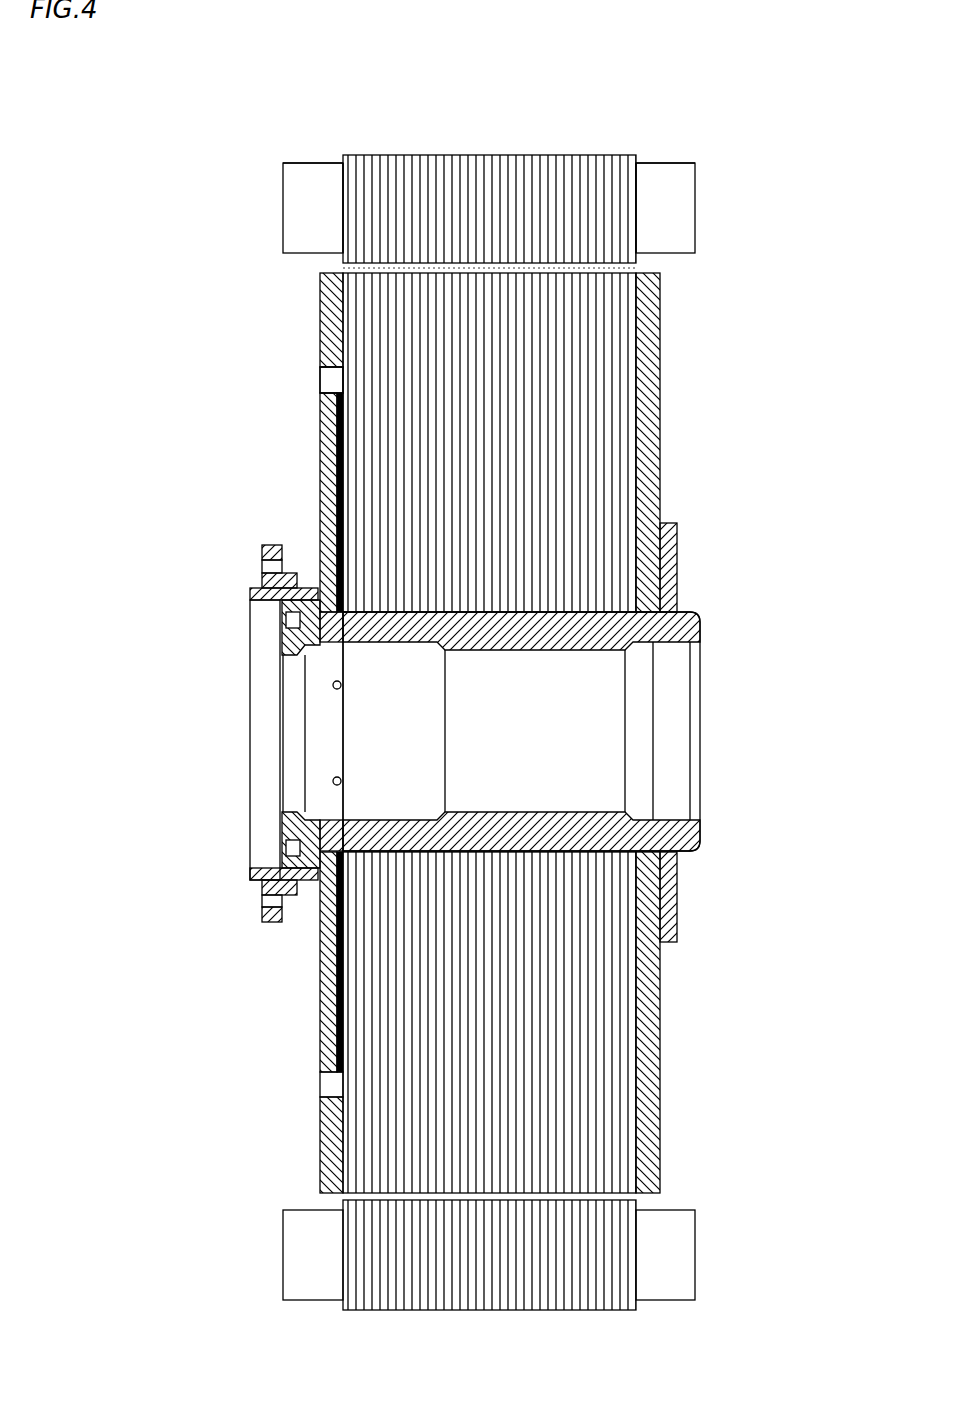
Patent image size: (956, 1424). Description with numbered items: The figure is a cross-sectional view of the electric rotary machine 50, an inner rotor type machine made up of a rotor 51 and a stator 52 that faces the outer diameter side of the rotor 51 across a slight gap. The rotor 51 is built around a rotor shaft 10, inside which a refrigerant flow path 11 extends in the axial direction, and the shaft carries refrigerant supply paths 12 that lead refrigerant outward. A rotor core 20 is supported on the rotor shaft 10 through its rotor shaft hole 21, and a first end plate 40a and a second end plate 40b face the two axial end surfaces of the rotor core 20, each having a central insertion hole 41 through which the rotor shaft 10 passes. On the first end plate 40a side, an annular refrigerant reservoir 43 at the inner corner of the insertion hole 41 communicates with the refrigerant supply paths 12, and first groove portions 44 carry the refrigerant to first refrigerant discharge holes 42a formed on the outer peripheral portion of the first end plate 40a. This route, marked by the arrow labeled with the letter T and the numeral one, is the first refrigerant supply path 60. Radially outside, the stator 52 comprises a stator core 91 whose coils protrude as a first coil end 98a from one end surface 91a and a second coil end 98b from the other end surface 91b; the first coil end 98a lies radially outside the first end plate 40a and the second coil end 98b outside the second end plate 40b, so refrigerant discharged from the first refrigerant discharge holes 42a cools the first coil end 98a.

The rotor shaft 10 is at (655, 600).
The refrigerant flow path 11 is at (590, 672).
The refrigerant supply paths 12 is at (285, 815).
The rotor core 20 is at (534, 258).
The rotor shaft hole 21 is at (612, 575).
The first end plate 40a is at (322, 1010).
The second end plate 40b is at (658, 975).
The insertion hole 41 is at (650, 840).
The first refrigerant discharge holes 42a is at (330, 380).
The refrigerant reservoir 43 is at (355, 823).
The first groove portions 44 is at (345, 465).
The electric rotary machine 50 is at (782, 72).
The rotor 51 is at (685, 318).
The stator 52 is at (680, 160).
The first refrigerant supply path 60 is at (320, 380).
The stator core 91 is at (380, 190).
The one end surface 91a is at (343, 178).
The other end surface 91b is at (640, 178).
The first coil end 98a is at (300, 175).
The second coil end 98b is at (663, 182).